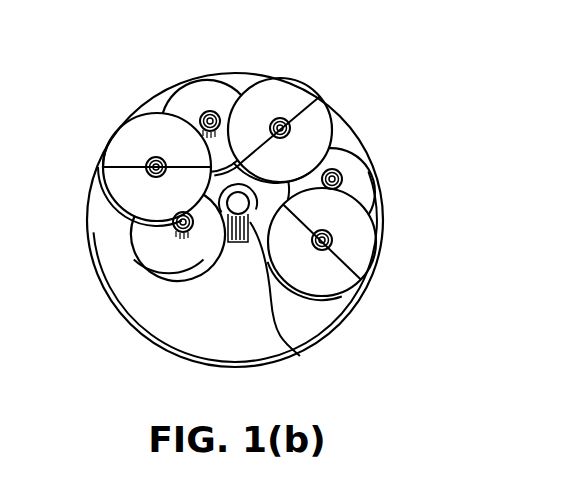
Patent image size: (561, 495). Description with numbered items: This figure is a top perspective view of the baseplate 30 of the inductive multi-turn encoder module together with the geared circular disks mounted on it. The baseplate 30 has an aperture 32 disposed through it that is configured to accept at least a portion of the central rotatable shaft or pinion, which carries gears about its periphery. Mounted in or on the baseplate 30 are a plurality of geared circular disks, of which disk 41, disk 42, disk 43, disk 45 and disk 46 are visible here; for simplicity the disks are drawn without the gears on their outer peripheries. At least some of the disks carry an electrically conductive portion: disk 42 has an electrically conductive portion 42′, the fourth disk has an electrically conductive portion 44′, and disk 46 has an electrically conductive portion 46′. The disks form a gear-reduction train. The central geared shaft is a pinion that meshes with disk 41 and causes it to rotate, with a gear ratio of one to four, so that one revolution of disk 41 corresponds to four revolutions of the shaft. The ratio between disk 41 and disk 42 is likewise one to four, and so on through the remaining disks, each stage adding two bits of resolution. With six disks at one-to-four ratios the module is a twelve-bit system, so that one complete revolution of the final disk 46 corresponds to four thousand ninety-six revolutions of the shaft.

The baseplate 30 is at (158, 338).
The aperture 32 is at (258, 184).
The geared circular disk 41 is at (206, 264).
The geared circular disk 42 is at (118, 182).
The electrically conductive portion 42′ is at (111, 150).
The geared circular disk 43 is at (196, 94).
The electrically conductive portion 44′ is at (290, 88).
The geared circular disk 45 is at (372, 192).
The geared circular disk 46 is at (343, 298).
The electrically conductive portion 46′ is at (366, 262).